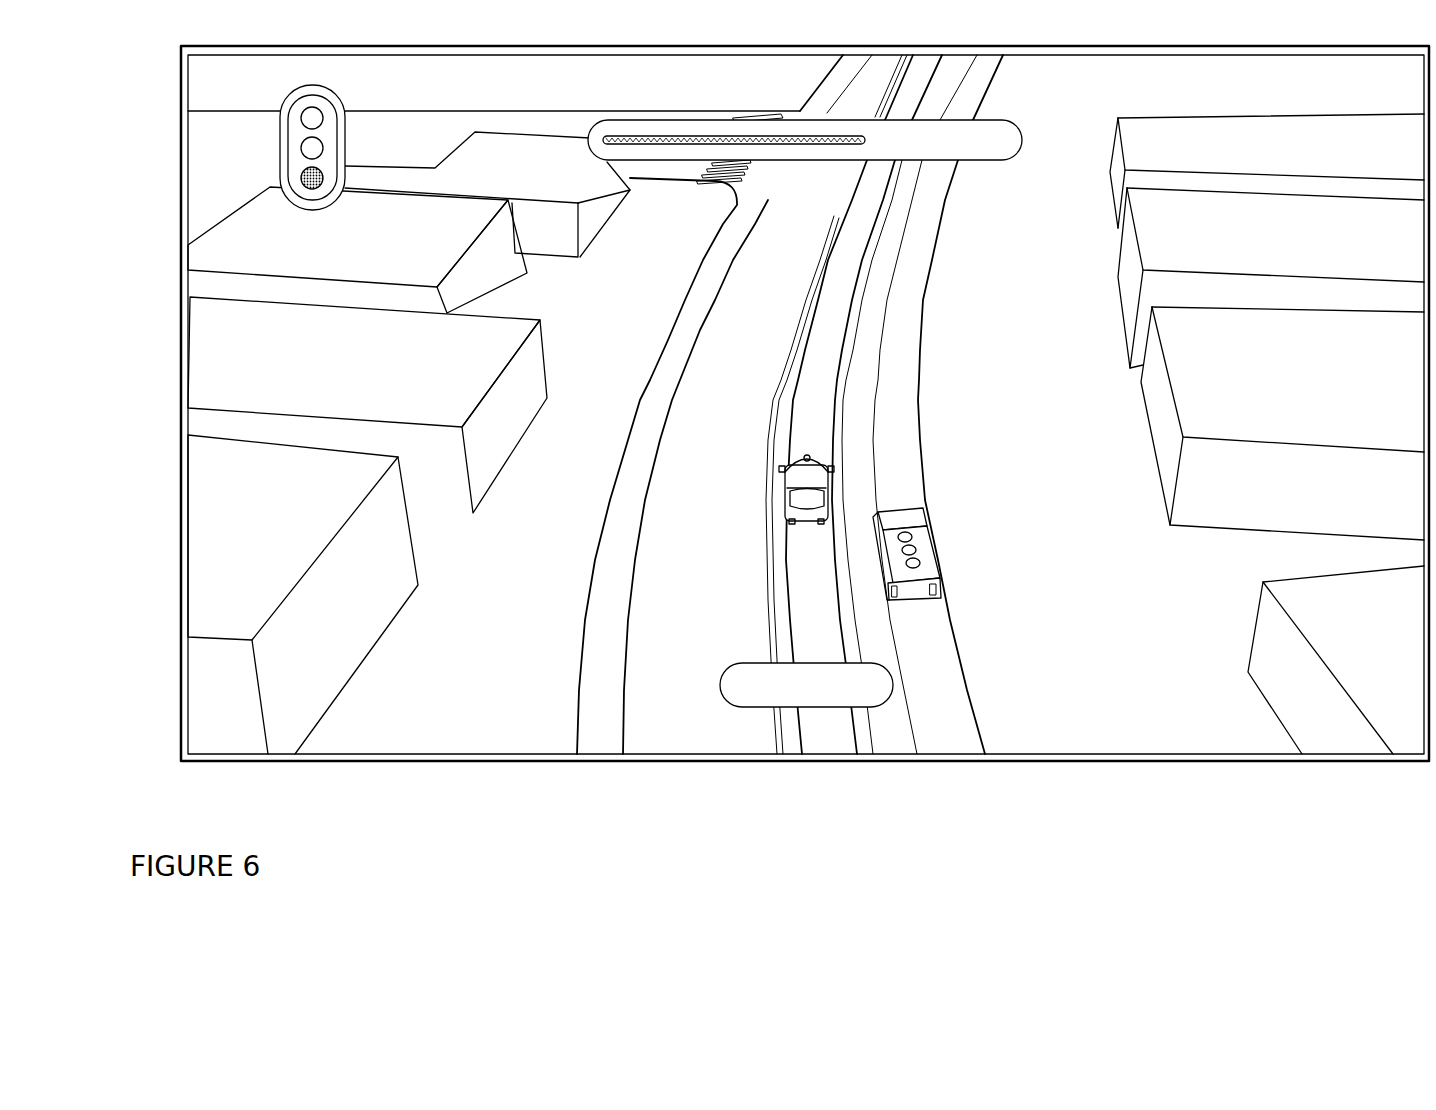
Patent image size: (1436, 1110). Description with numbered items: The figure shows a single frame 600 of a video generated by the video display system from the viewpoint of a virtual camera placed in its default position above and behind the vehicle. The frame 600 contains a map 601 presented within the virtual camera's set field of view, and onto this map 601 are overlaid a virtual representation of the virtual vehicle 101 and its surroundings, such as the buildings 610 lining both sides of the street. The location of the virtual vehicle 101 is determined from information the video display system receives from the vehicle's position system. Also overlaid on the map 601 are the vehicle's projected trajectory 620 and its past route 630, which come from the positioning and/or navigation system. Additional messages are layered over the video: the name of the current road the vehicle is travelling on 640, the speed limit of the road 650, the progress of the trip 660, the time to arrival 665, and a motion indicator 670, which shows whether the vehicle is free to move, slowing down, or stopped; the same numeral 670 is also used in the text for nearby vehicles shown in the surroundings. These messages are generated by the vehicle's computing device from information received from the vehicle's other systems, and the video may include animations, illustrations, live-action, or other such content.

The frame 600 is at (214, 840).
The map 601 is at (805, 422).
The buildings 610 is at (1128, 251).
The projected trajectory 620 is at (833, 327).
The past route 630 is at (802, 558).
The current road message 640 is at (723, 631).
The speed limit message 650 is at (720, 693).
The trip progress message 660 is at (798, 120).
The time to arrival message 665 is at (968, 127).
The motion indicator 670 is at (330, 110).
The virtual vehicle 101 is at (782, 497).